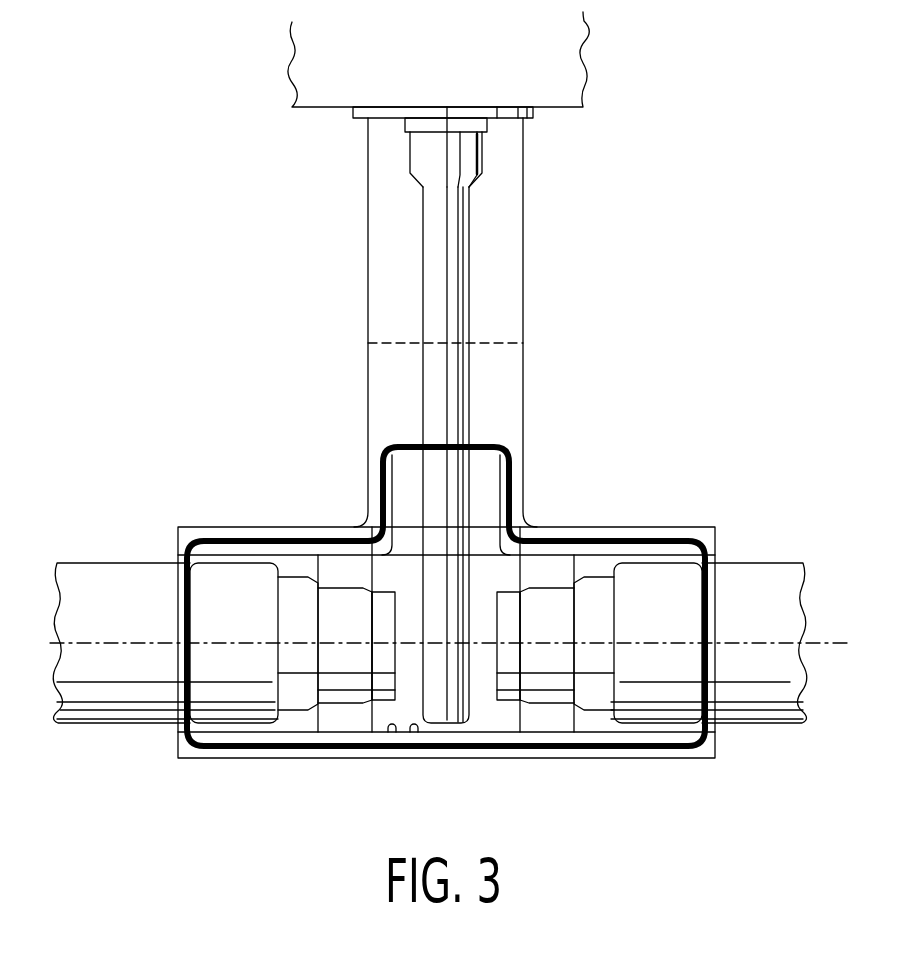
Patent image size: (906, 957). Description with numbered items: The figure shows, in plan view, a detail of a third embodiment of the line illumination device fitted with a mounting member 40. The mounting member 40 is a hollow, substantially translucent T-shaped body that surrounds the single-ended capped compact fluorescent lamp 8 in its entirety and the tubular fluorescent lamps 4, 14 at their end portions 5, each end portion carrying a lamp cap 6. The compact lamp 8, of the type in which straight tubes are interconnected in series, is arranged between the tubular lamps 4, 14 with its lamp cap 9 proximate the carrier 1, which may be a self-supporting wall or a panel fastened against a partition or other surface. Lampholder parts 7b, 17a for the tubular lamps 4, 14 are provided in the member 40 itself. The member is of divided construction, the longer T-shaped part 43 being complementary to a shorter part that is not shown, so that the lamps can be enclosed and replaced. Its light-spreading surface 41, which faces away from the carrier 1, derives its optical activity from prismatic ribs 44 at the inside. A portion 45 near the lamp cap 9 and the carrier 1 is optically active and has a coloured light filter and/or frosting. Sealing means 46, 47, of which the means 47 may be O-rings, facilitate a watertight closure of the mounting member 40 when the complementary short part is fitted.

The carrier 1 is at (558, 78).
The tubular fluorescent lamp 4 is at (143, 707).
The end portion 5 is at (271, 686).
The lamp cap 6 is at (295, 700).
The lampholder part 7b is at (340, 690).
The compact fluorescent lamp 8 is at (460, 371).
The lamp cap 9 is at (468, 155).
The tubular fluorescent lamp 14 is at (752, 692).
The lampholder part 17a is at (543, 692).
The mounting member 40 is at (523, 214).
The light-spreading surface 41 is at (383, 759).
The second T-shaped part 43 is at (512, 452).
The prismatic ribs 44 is at (414, 734).
The portion 45 is at (508, 270).
The sealing means 46 is at (510, 492).
The sealing means 47 is at (178, 586).